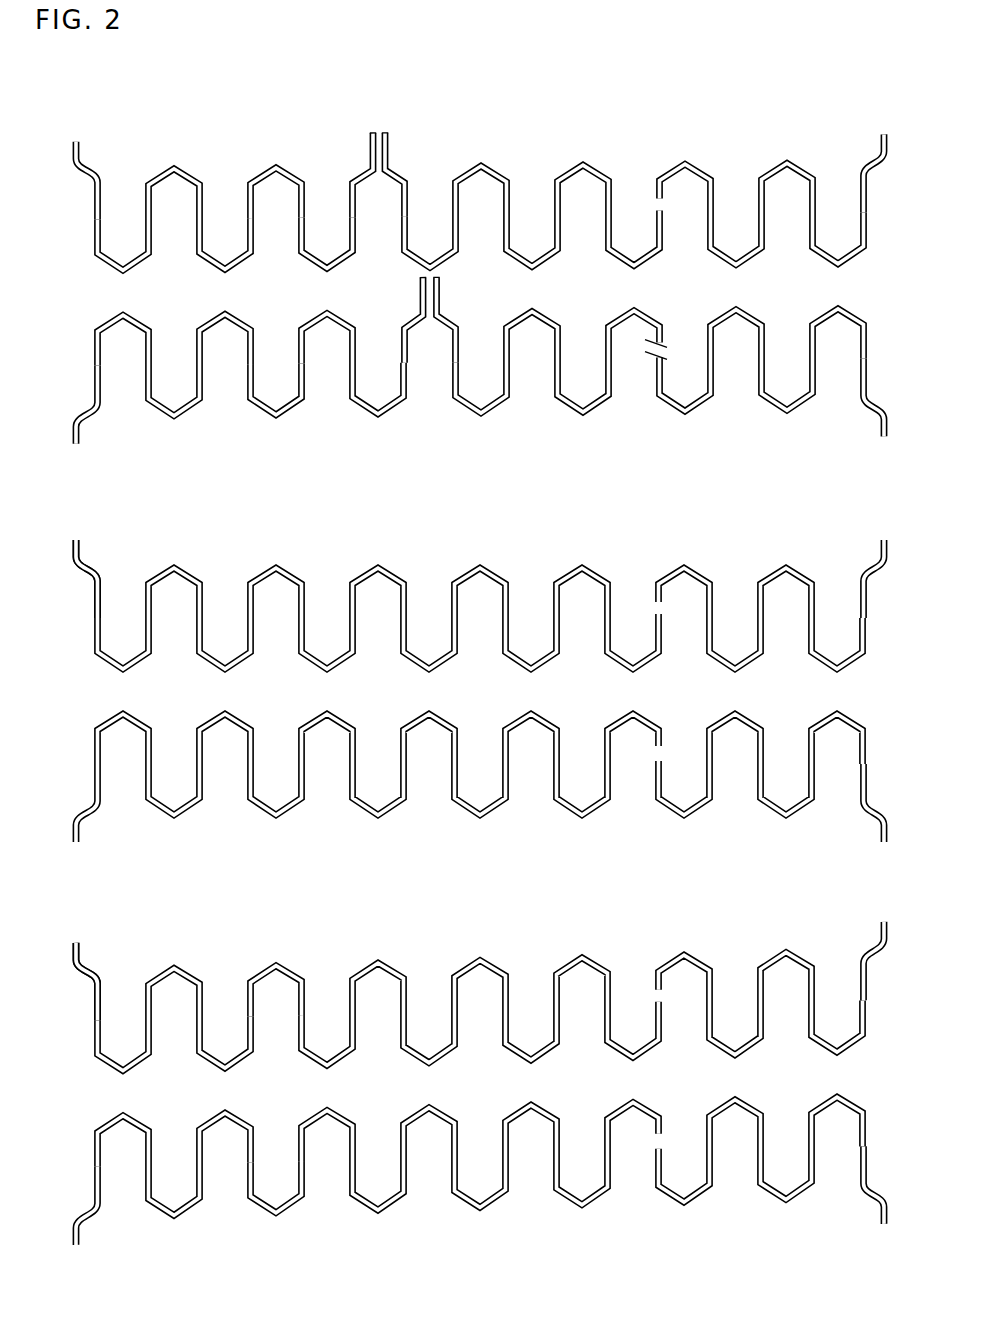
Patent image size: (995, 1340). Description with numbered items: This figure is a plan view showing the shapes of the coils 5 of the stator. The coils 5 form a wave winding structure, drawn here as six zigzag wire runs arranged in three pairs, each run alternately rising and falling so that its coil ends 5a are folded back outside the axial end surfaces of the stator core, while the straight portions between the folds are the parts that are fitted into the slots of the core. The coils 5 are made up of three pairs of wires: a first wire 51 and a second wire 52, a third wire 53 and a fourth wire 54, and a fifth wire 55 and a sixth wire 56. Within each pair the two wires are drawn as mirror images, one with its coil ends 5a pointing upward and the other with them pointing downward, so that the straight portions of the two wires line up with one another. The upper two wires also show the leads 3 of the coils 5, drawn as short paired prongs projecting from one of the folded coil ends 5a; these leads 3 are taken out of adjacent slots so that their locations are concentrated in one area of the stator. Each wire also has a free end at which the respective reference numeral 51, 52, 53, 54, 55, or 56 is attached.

The lead 3 is at (390, 138).
The coil 5 is at (485, 128).
The coil end 5a is at (295, 172).
The first wire 51 is at (880, 140).
The second wire 52 is at (78, 428).
The third wire 53 is at (77, 545).
The fourth wire 54 is at (78, 827).
The fifth wire 55 is at (77, 945).
The sixth wire 56 is at (78, 1230).